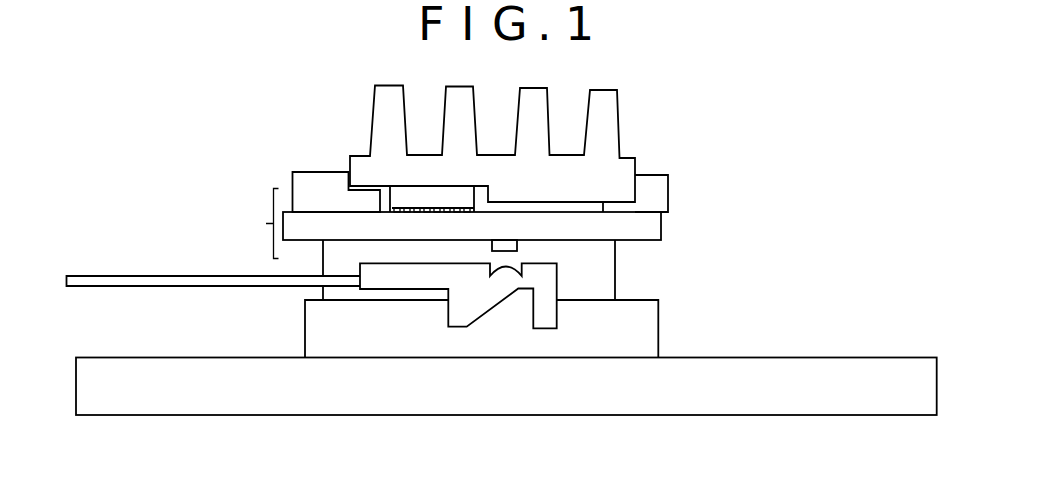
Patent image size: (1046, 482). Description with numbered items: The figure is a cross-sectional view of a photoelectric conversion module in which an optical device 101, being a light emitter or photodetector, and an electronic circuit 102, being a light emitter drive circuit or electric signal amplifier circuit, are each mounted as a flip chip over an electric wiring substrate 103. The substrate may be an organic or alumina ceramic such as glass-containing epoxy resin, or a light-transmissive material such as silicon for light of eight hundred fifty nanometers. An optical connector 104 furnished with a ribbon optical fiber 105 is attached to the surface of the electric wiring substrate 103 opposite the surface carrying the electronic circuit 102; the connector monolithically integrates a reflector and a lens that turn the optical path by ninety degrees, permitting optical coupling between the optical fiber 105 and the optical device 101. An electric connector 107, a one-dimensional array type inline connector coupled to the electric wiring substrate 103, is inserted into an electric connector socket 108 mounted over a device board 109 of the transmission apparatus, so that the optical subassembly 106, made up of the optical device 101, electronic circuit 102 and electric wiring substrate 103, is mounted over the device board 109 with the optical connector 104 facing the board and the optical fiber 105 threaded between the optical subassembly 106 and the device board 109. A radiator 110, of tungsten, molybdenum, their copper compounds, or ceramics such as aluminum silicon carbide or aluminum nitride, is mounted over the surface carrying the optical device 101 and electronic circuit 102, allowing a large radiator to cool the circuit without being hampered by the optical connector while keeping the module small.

The optical device 101 is at (520, 250).
The electronic circuit 102 is at (413, 193).
The electric wiring substrate 103 is at (652, 233).
The optical connector 104 is at (555, 283).
The ribbon optical fiber 105 is at (123, 282).
The optical subassembly 106 is at (252, 222).
The electric connector 107 is at (600, 292).
The electric connector socket 108 is at (640, 346).
The device board 109 is at (800, 367).
The radiator 110 is at (613, 142).